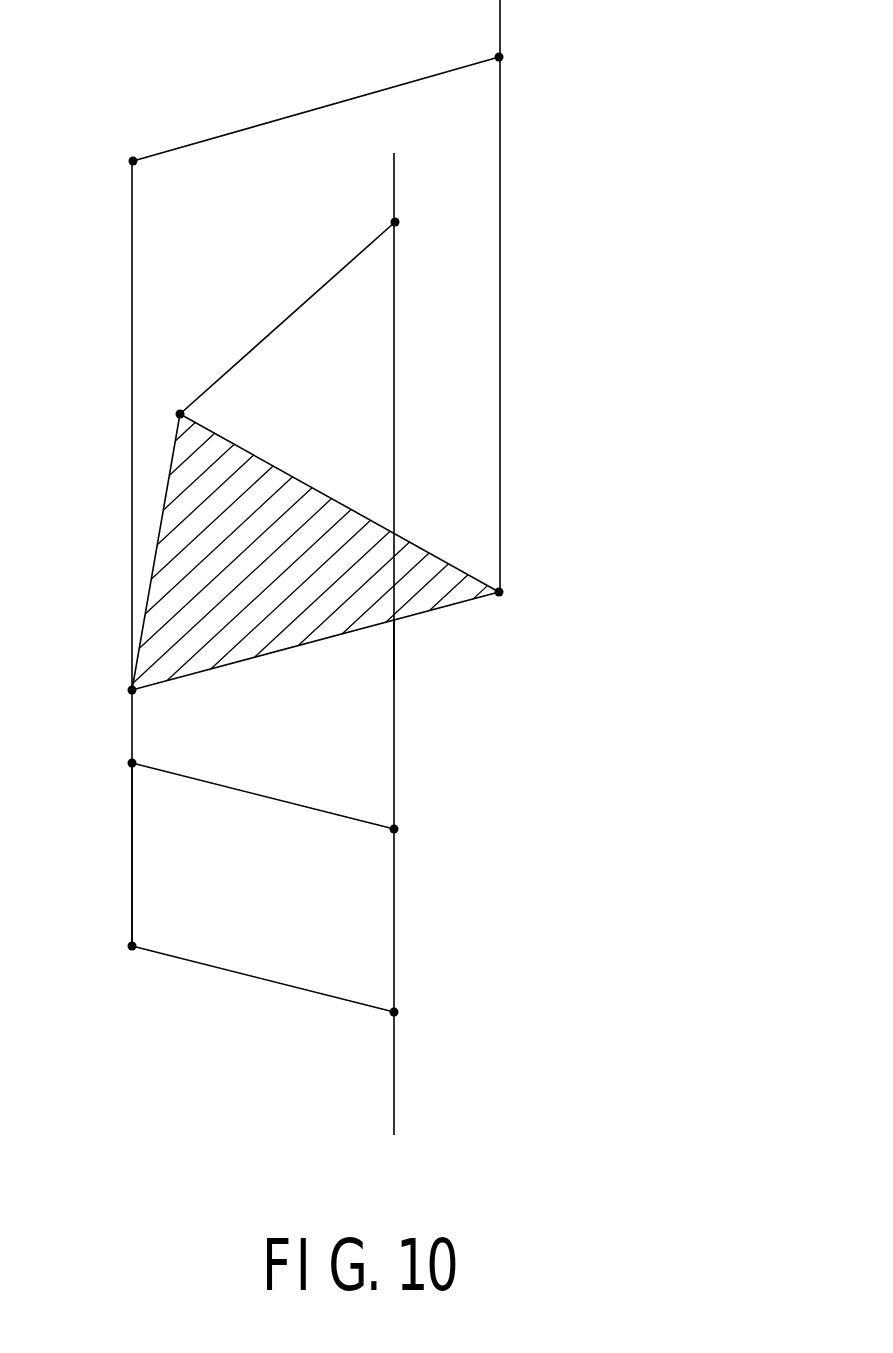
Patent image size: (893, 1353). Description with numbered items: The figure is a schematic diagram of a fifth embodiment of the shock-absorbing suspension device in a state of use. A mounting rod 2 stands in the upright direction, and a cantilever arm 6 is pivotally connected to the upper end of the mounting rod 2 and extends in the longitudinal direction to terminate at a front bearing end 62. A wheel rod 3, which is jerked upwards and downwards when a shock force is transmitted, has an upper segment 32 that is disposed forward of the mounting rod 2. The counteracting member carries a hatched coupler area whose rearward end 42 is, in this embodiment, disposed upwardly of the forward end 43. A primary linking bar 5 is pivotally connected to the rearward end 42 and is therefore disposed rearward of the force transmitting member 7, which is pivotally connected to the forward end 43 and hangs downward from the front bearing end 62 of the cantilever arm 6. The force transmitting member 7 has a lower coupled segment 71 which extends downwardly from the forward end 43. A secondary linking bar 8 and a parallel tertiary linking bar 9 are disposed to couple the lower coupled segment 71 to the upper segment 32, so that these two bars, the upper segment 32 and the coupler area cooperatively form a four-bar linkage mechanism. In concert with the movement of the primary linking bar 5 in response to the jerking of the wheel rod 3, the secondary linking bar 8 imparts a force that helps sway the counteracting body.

The mounting rod 2 is at (511, 274).
The wheel rod 3 is at (409, 700).
The upper segment 32 is at (399, 652).
The primary linking bar 5 is at (288, 315).
The cantilever arm 6 is at (318, 107).
The front bearing end 62 is at (128, 159).
The force transmitting member 7 is at (133, 403).
The lower coupled segment 71 is at (133, 814).
The secondary linking bar 8 is at (262, 797).
The tertiary linking bar 9 is at (285, 986).
The rearward end 42 is at (180, 408).
The forward end 43 is at (127, 688).